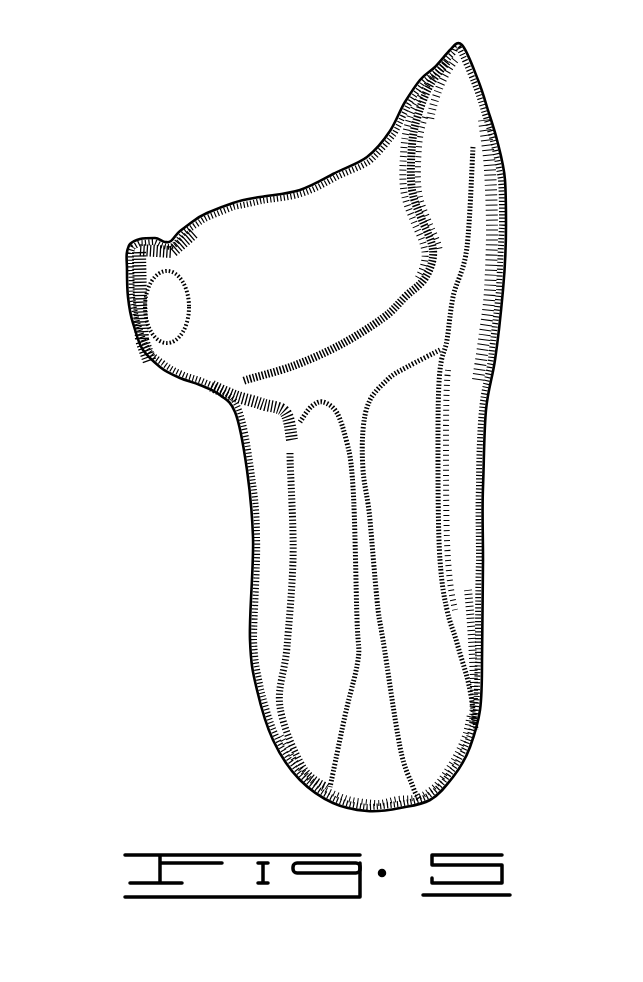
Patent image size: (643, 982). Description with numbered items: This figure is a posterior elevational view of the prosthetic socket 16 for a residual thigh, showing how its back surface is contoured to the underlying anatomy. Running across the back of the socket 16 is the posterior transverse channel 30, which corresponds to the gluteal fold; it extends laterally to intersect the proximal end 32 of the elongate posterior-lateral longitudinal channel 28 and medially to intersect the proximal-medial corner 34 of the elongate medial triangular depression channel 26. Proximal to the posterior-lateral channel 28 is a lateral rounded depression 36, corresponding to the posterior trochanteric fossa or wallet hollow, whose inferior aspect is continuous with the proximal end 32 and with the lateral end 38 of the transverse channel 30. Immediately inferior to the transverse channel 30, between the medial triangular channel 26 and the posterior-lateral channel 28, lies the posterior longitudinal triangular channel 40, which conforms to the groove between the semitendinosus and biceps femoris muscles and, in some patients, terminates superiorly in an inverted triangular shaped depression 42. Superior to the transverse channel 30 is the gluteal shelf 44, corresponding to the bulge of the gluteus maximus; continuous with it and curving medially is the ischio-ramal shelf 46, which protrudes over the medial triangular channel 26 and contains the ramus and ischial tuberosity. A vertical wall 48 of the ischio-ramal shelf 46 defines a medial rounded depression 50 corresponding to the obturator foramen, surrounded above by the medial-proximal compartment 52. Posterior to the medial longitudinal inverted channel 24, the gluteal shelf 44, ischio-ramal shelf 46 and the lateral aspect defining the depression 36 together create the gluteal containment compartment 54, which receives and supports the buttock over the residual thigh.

The socket 16 is at (187, 100).
The medial longitudinal inverted channel 24 is at (240, 455).
The elongate medial triangular depression channel 26 is at (273, 578).
The elongate posterior-lateral longitudinal channel 28 is at (460, 437).
The posterior transverse channel 30 is at (422, 308).
The proximal end 32 is at (477, 328).
The proximal-medial corner 34 is at (270, 437).
The lateral rounded depression 36 is at (468, 108).
The lateral end 38 is at (437, 263).
The posterior longitudinal triangular channel 40 is at (370, 583).
The inverted triangular shaped depression 42 is at (353, 407).
The gluteal shelf 44 is at (335, 235).
The ischio-ramal shelf 46 is at (180, 363).
The vertical wall 48 is at (123, 246).
The medial rounded depression 50 is at (170, 320).
The medial-proximal compartment 52 is at (170, 242).
The gluteal containment compartment 54 is at (198, 208).